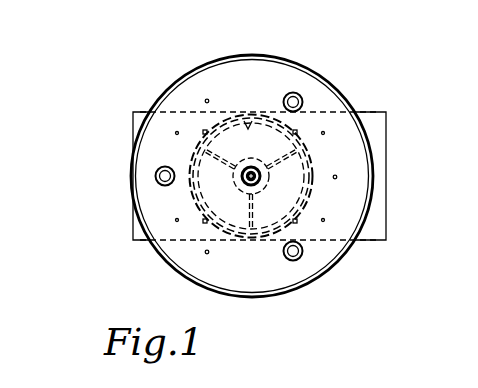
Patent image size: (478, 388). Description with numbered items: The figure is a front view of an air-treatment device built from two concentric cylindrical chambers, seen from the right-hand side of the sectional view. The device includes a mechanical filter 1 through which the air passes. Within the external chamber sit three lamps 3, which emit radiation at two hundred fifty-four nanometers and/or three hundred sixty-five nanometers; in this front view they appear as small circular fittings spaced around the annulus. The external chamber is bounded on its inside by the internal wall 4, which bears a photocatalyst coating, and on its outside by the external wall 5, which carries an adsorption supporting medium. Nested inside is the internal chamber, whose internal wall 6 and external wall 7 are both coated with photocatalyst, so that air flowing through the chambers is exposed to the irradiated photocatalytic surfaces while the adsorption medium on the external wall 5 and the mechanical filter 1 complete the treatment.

The mechanical filter 1 is at (377, 132).
The lamps 3 is at (298, 93).
The internal wall of the external chamber 4 is at (266, 286).
The external wall of the external chamber 5 is at (250, 298).
The internal wall of the internal chamber 6 is at (250, 121).
The external wall of the internal chamber 7 is at (218, 116).